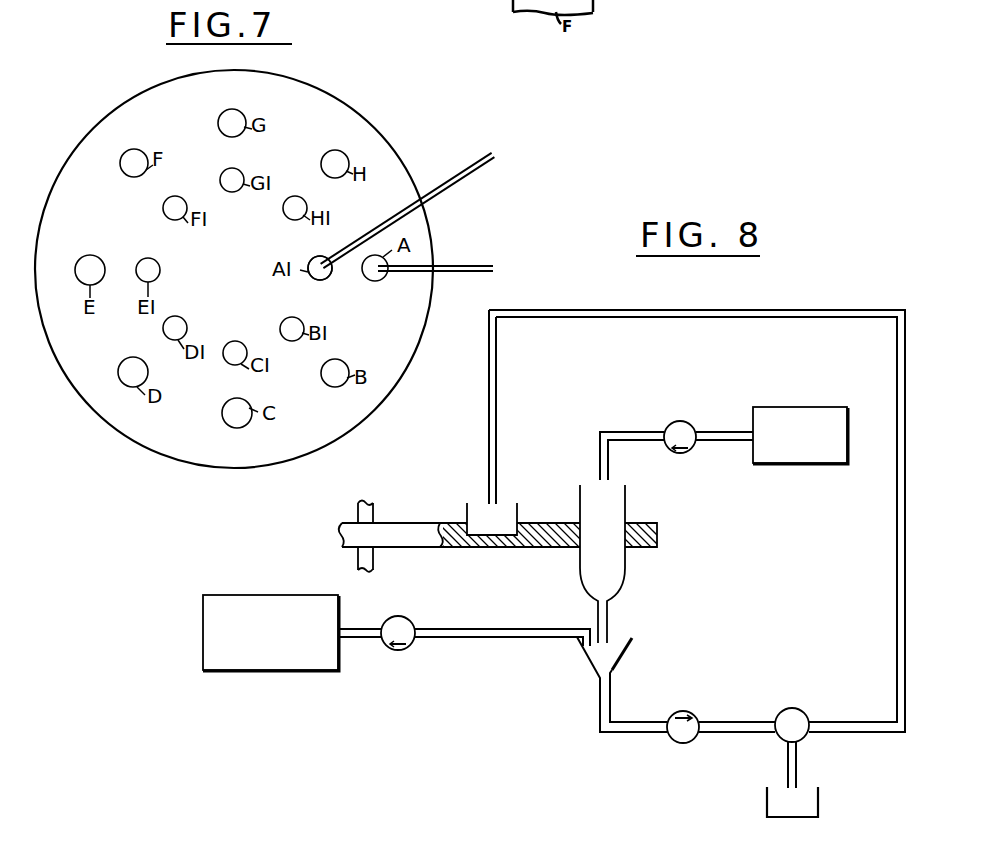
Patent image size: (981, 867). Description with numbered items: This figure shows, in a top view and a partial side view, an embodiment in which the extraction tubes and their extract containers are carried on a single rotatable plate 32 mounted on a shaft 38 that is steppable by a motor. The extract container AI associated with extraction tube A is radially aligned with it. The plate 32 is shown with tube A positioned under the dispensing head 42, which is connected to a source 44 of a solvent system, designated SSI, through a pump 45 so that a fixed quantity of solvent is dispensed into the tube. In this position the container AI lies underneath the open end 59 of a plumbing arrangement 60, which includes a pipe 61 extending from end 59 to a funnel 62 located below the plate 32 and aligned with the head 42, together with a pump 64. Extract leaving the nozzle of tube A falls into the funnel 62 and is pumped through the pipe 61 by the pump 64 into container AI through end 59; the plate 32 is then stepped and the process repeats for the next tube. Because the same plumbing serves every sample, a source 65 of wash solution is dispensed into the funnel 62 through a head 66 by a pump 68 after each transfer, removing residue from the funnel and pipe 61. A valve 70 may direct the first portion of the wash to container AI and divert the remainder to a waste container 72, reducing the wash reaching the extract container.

In FIG. 7, the rotatable plate 32 is at (369, 125).
In FIG. 8, the rotatable plate 32 is at (658, 534).
In FIG. 8, the shaft 38 is at (374, 563).
In FIG. 7, the dispensing head 42 is at (385, 278).
In FIG. 8, the dispensing head 42 is at (600, 468).
In FIG. 8, the source of solvent system 44 is at (813, 406).
In FIG. 8, the pump 45 is at (679, 421).
In FIG. 7, the end of plumbing arrangement 59 is at (328, 277).
In FIG. 8, the end of plumbing arrangement 59 is at (489, 480).
In FIG. 7, the plumbing arrangement 60 is at (444, 198).
In FIG. 8, the plumbing arrangement 60 is at (633, 322).
In FIG. 8, the pipe 61 is at (722, 319).
In FIG. 8, the funnel 62 is at (615, 664).
In FIG. 8, the pump 64 is at (684, 711).
In FIG. 8, the source of wash solution 65 is at (306, 673).
In FIG. 8, the head 66 is at (567, 643).
In FIG. 8, the pump 68 is at (398, 652).
In FIG. 8, the valve 70 is at (787, 708).
In FIG. 8, the waste container 72 is at (820, 798).
In FIG. 8, the extraction tube A is at (627, 510).
In FIG. 8, the extract container AI is at (518, 518).